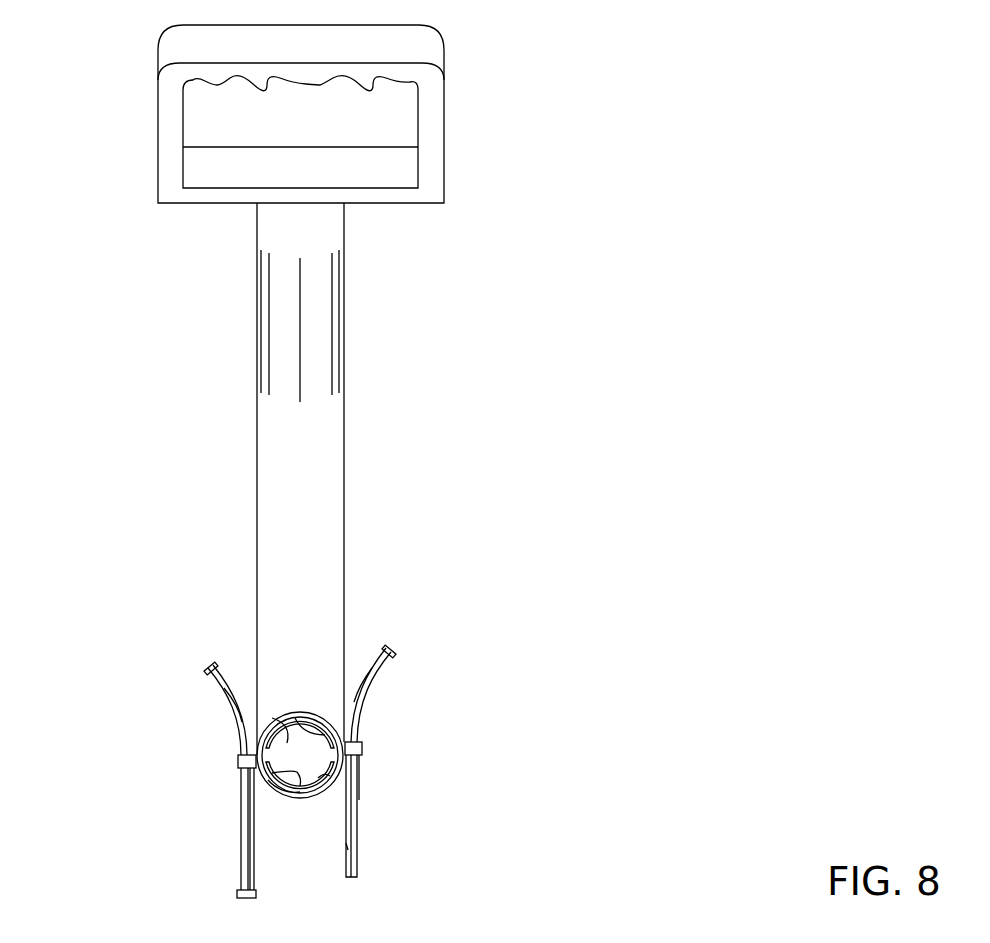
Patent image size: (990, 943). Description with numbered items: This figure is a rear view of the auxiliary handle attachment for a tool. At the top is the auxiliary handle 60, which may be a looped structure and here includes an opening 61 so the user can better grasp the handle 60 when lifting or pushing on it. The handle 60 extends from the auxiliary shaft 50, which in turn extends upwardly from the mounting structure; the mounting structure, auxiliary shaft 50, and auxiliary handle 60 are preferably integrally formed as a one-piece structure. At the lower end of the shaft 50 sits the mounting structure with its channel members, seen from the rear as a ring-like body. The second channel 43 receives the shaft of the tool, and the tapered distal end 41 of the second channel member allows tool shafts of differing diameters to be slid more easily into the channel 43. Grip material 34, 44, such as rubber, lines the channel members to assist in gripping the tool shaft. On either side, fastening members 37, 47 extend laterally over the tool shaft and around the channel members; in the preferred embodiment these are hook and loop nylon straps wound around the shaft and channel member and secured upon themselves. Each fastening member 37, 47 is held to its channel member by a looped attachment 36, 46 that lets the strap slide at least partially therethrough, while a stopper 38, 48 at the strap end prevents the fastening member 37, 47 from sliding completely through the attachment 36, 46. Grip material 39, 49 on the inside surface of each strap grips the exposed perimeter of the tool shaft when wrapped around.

The auxiliary handle 60 is at (443, 53).
The opening 61 is at (240, 105).
The auxiliary shaft 50 is at (345, 445).
The tapered distal end 41 is at (300, 712).
The second channel 43 is at (278, 715).
The grip material 44 is at (334, 712).
The grip material 49 is at (349, 792).
The grip material 34 is at (268, 780).
The fastening member 37 is at (216, 676).
The fastening member 47 is at (390, 650).
The looped attachment 36 is at (238, 763).
The looped attachment 46 is at (362, 748).
The grip material 39 is at (255, 858).
The stopper 48 is at (357, 827).
The stopper 38 is at (237, 897).